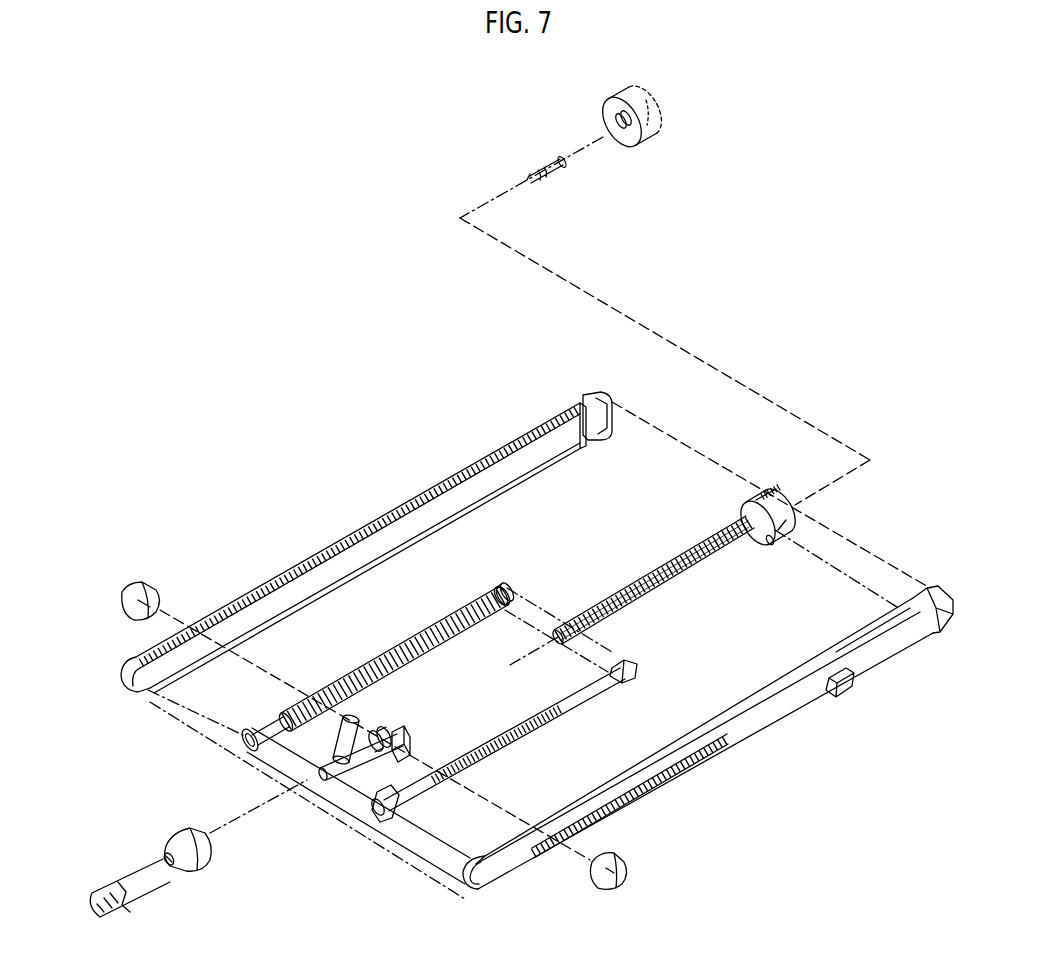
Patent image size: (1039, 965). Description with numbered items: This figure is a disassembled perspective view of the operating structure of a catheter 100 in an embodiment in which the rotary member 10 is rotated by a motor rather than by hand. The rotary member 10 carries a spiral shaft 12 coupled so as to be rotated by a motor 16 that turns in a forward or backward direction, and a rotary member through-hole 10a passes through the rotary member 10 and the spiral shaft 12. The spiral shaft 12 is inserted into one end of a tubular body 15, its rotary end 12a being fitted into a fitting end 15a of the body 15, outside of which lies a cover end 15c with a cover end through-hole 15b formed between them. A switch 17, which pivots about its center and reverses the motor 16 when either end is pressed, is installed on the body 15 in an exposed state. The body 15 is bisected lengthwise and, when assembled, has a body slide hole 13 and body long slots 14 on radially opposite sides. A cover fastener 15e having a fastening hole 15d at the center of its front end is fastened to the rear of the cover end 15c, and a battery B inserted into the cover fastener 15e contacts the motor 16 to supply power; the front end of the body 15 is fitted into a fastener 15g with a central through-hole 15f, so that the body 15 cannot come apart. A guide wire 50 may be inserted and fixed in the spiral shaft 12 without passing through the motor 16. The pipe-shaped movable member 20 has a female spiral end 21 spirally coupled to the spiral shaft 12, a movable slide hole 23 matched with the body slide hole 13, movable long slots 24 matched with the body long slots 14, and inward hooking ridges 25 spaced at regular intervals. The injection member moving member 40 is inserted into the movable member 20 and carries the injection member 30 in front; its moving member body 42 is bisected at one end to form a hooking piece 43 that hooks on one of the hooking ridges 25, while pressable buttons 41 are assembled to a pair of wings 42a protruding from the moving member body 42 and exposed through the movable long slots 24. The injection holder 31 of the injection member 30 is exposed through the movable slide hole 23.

The catheter 100 is at (751, 305).
The battery B is at (652, 104).
The fastening hole 15d is at (612, 128).
The cover fastener 15e is at (628, 122).
The guide wire 50 is at (565, 168).
The cover end 15c is at (583, 402).
The fitting end 15a is at (586, 441).
The motor 16 is at (765, 512).
The rotary end 12a is at (768, 546).
The spiral shaft 12 is at (700, 567).
The rotary member 10 is at (628, 597).
The rotary member through-hole 10a is at (559, 643).
The female spiral end 21 is at (384, 643).
The hooking ridges 25 is at (430, 660).
The movable slide hole 23 is at (515, 722).
The movable long slots 24 is at (598, 695).
The movable member 20 is at (509, 741).
The injection member moving member 40 is at (478, 766).
The body slide hole 13 is at (703, 727).
The body long slots 14 is at (613, 813).
The pressable buttons 41 is at (617, 881).
The tubular body 15 is at (708, 737).
The switch 17 is at (847, 687).
The cover end through-hole 15b is at (935, 634).
The injection member 30 is at (348, 735).
The injection holder 31 is at (358, 718).
The hooking piece 43 is at (390, 730).
The wings 42a is at (417, 753).
The moving member body 42 is at (375, 748).
The through-hole 15f is at (166, 852).
The fastener 15g is at (200, 850).